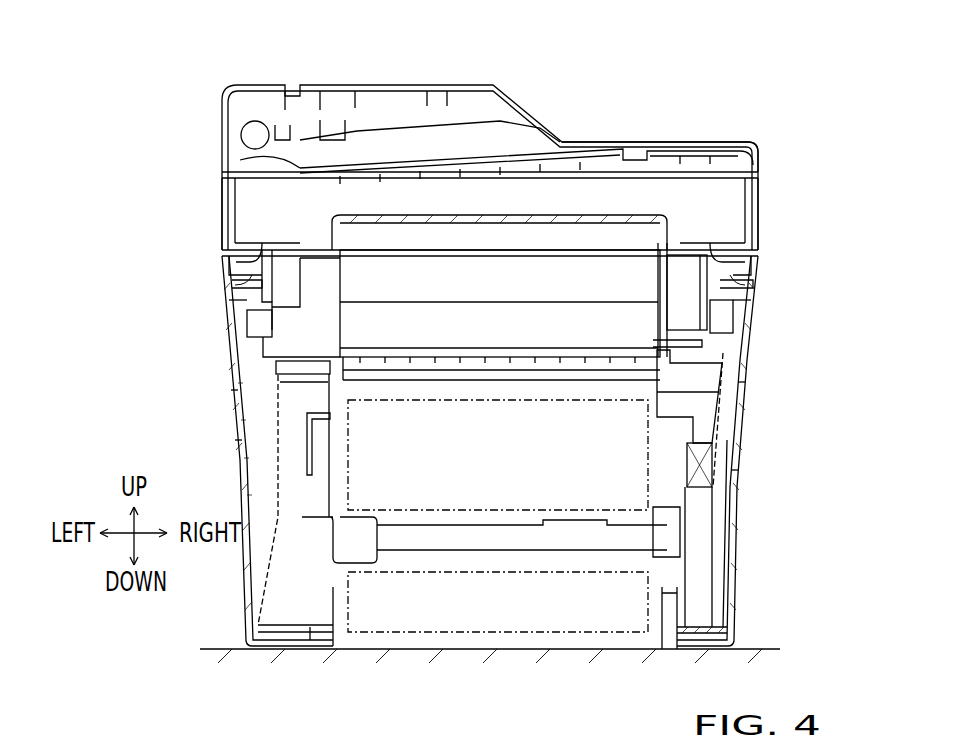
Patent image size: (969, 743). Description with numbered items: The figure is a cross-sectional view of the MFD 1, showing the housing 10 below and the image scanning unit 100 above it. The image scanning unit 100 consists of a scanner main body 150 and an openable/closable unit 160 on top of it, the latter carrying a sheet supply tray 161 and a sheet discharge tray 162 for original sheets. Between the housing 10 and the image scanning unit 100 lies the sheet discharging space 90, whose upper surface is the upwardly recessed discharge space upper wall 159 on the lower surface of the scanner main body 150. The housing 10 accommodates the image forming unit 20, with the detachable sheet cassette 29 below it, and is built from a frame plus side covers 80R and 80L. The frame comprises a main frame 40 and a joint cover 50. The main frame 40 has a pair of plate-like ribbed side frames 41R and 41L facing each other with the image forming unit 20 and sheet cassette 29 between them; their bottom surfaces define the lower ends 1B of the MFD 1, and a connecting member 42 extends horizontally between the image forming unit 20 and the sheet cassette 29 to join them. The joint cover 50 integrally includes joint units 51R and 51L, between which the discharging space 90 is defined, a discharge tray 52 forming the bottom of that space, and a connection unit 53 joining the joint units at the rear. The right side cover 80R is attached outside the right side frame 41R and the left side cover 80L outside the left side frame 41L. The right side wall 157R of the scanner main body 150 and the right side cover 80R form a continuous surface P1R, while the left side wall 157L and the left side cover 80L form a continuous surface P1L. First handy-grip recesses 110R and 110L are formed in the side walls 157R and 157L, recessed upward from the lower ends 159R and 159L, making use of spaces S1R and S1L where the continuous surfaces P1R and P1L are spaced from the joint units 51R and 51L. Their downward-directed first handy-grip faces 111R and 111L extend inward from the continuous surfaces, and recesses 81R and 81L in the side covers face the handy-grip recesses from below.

The MFD 1 is at (822, 80).
The lower ends 1B is at (327, 652).
The housing 10 is at (739, 581).
The image forming unit 20 is at (484, 468).
The sheet cassette 29 is at (484, 618).
The main frame 40 is at (722, 428).
The left side frame 41L is at (302, 555).
The right side frame 41R is at (697, 568).
The connecting member 42 is at (573, 537).
The joint cover 50 is at (745, 336).
The left joint unit 51L is at (315, 293).
The right joint unit 51R is at (685, 290).
The discharge tray 52 is at (513, 353).
The connection unit 53 is at (462, 325).
The left side cover 80L is at (241, 440).
The right side cover 80R is at (738, 470).
The left recess 81L is at (247, 296).
The right recess 81R is at (720, 297).
The sheet discharging space 90 is at (484, 288).
The image scanning unit 100 is at (366, 80).
The left first handy-grip recess 110L is at (220, 260).
The right first handy-grip recess 110R is at (735, 265).
The left first handy-grip face 111L is at (257, 243).
The right first handy-grip face 111R is at (722, 243).
The scanner main body 150 is at (772, 192).
The left side wall 157L is at (220, 197).
The right side wall 157R is at (762, 210).
The discharge space upper wall 159 is at (488, 227).
The left lower end 159L is at (240, 273).
The right lower end 159R is at (740, 272).
The openable/closable unit 160 is at (712, 140).
The sheet supply tray 161 is at (475, 85).
The sheet discharge tray 162 is at (580, 148).
The left continuous surface P1L is at (234, 393).
The right continuous surface P1R is at (746, 382).
The left space S1L is at (227, 302).
The right space S1R is at (743, 295).